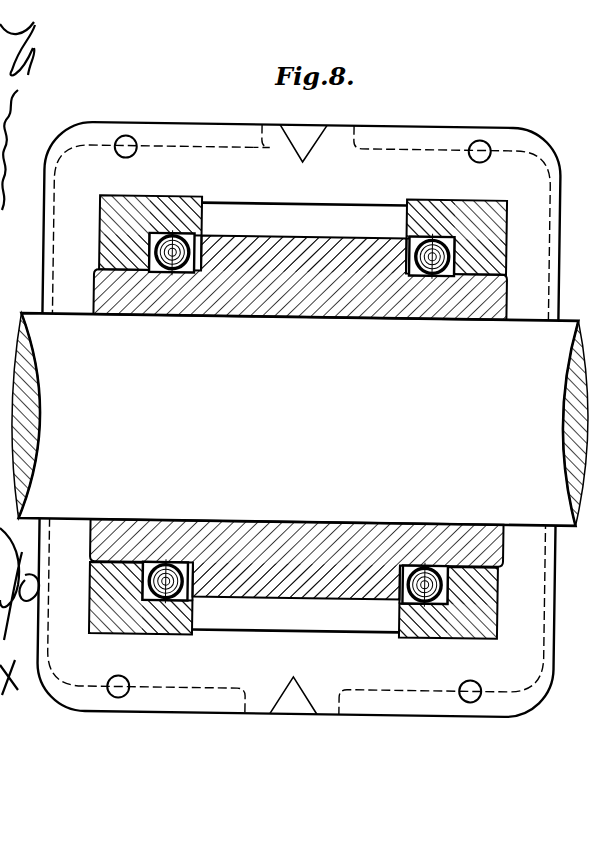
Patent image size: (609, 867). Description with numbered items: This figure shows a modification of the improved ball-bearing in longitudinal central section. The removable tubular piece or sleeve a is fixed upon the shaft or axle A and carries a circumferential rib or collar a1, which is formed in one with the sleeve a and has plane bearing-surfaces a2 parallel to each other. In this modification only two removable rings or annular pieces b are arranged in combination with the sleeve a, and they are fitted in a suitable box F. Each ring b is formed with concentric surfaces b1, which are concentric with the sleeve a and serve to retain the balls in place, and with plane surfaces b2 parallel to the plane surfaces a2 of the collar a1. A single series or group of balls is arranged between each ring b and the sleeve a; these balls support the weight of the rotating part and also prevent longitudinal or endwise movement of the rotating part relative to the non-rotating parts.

The shaft or axle A is at (300, 419).
The box F is at (299, 419).
The removable tubular piece or sleeve a is at (299, 417).
The circumferential projection, rib, or collar a1 is at (299, 418).
The plane bearing-surfaces a2 is at (194, 255).
The removable rings or annular pieces b is at (298, 417).
The concentric surfaces b1 is at (168, 236).
The plane surfaces b2 is at (297, 417).